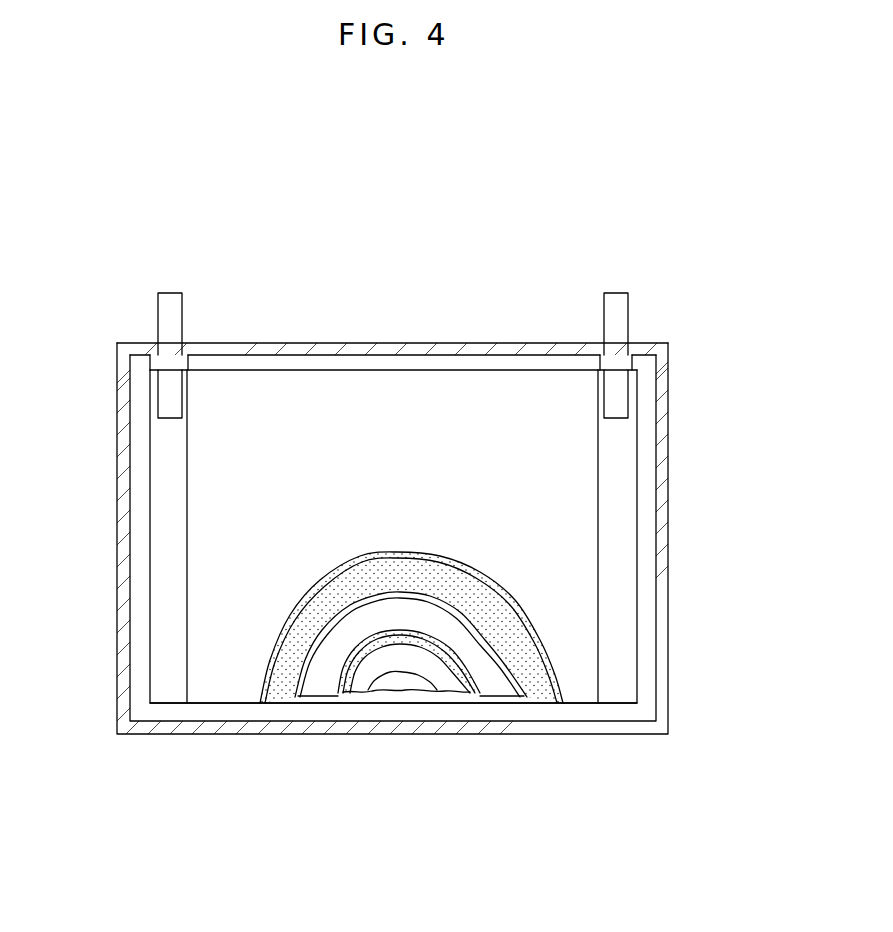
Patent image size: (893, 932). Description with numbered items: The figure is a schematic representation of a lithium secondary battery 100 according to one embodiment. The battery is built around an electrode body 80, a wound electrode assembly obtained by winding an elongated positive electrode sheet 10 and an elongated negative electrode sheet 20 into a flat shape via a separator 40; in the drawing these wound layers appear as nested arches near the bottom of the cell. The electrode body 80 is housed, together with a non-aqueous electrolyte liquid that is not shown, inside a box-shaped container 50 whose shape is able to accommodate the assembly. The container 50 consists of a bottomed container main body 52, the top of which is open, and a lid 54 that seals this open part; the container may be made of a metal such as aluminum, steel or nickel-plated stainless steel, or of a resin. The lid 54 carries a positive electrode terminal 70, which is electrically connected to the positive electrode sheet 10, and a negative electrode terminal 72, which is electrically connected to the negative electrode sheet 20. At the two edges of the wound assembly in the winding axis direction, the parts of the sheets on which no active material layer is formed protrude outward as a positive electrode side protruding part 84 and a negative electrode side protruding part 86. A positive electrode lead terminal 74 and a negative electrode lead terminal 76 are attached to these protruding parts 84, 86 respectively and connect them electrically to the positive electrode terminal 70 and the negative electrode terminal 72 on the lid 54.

The lithium secondary battery 100 is at (543, 189).
The positive electrode sheet 10 is at (234, 686).
The negative electrode sheet 20 is at (322, 688).
The separator 40 is at (280, 690).
The container 50 is at (668, 490).
The container main body 52 is at (661, 608).
The lid 54 is at (283, 342).
The positive electrode terminal 70 is at (174, 304).
The negative electrode terminal 72 is at (617, 304).
The positive electrode lead terminal 74 is at (175, 403).
The negative electrode lead terminal 76 is at (615, 403).
The electrode body 80 is at (355, 415).
The positive electrode side protruding part 84 is at (168, 570).
The negative electrode side protruding part 86 is at (620, 588).